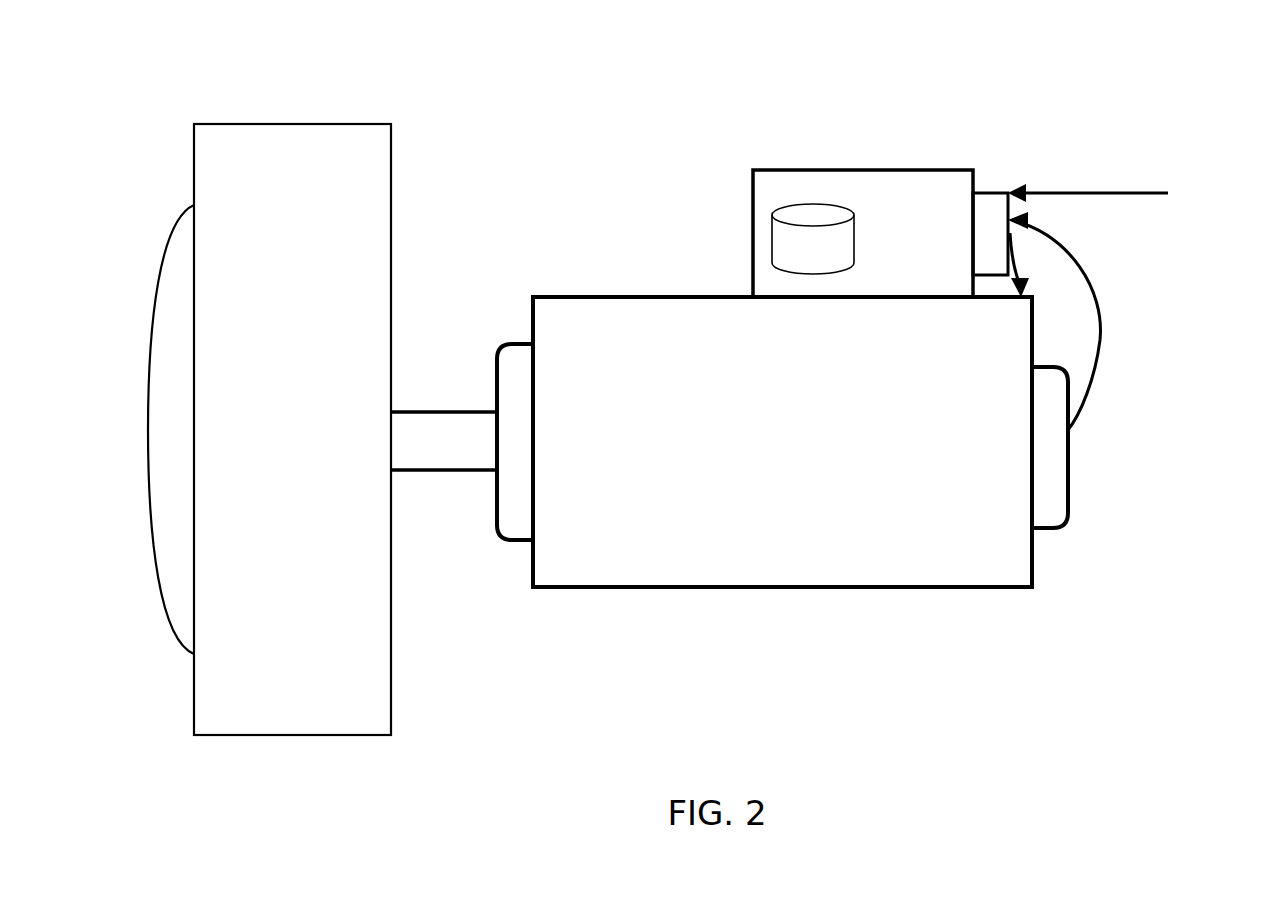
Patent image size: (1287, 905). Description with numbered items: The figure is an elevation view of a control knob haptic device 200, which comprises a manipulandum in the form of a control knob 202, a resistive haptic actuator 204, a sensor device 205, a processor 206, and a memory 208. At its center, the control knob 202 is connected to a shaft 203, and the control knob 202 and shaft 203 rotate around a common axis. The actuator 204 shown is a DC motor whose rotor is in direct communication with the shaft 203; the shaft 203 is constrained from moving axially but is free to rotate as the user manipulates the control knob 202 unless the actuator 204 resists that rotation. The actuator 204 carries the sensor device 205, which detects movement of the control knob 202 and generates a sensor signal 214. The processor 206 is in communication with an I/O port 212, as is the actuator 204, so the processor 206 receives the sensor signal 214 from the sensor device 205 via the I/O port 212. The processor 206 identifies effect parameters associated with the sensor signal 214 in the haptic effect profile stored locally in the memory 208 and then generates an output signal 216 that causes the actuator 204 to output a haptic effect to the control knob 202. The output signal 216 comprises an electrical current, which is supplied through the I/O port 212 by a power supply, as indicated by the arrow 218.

The control knob haptic device 200 is at (460, 148).
The control knob 202 is at (292, 735).
The shaft 203 is at (443, 470).
The resistive haptic actuator 204 is at (780, 587).
The sensor device 205 is at (1068, 517).
The processor 206 is at (863, 170).
The memory 208 is at (773, 240).
The I/O port 212 is at (990, 193).
The sensor signal 214 is at (1100, 333).
The output signal 216 is at (1010, 263).
The arrow 218 is at (1168, 193).